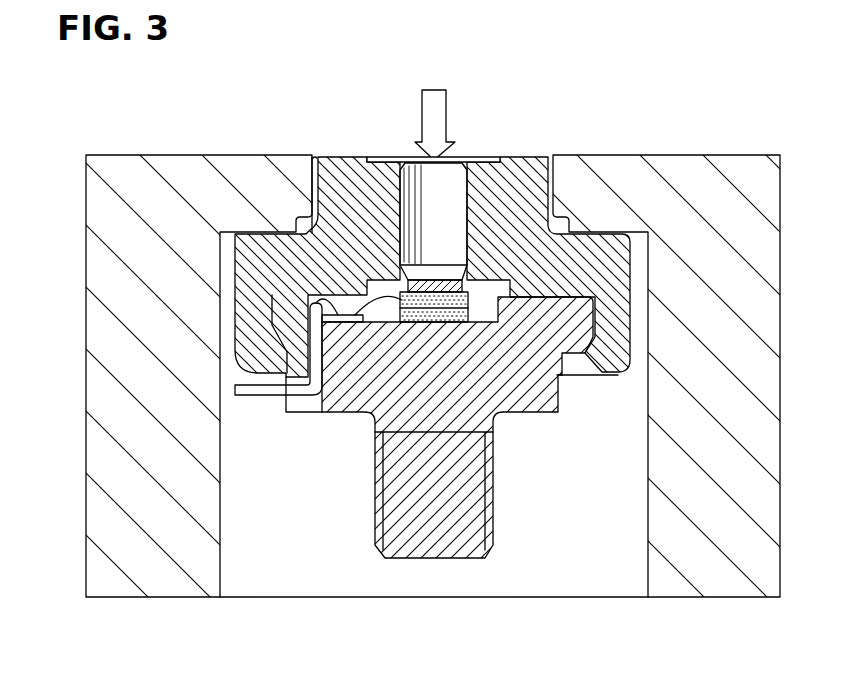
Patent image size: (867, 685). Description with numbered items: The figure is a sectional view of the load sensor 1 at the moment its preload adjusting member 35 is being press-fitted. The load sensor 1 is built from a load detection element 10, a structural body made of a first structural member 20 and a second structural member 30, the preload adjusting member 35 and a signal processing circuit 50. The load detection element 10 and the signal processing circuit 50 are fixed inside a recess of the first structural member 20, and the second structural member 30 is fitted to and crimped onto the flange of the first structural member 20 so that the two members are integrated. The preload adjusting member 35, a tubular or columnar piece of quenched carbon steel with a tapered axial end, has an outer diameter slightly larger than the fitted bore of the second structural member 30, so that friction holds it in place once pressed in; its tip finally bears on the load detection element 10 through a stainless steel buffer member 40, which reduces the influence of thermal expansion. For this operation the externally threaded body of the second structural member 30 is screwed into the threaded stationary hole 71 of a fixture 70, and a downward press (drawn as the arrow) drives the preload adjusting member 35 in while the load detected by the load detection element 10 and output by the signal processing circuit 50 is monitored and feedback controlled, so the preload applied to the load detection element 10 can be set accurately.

The load sensor 1 is at (588, 401).
The load detection element 10 is at (465, 322).
The first structural member 20 is at (334, 405).
The second structural member 30 is at (632, 258).
The preload adjusting member 35 is at (443, 195).
The buffer member 40 is at (430, 290).
The signal processing circuit 50 is at (345, 322).
The fixture 70 is at (736, 178).
The stationary hole 71 is at (315, 163).